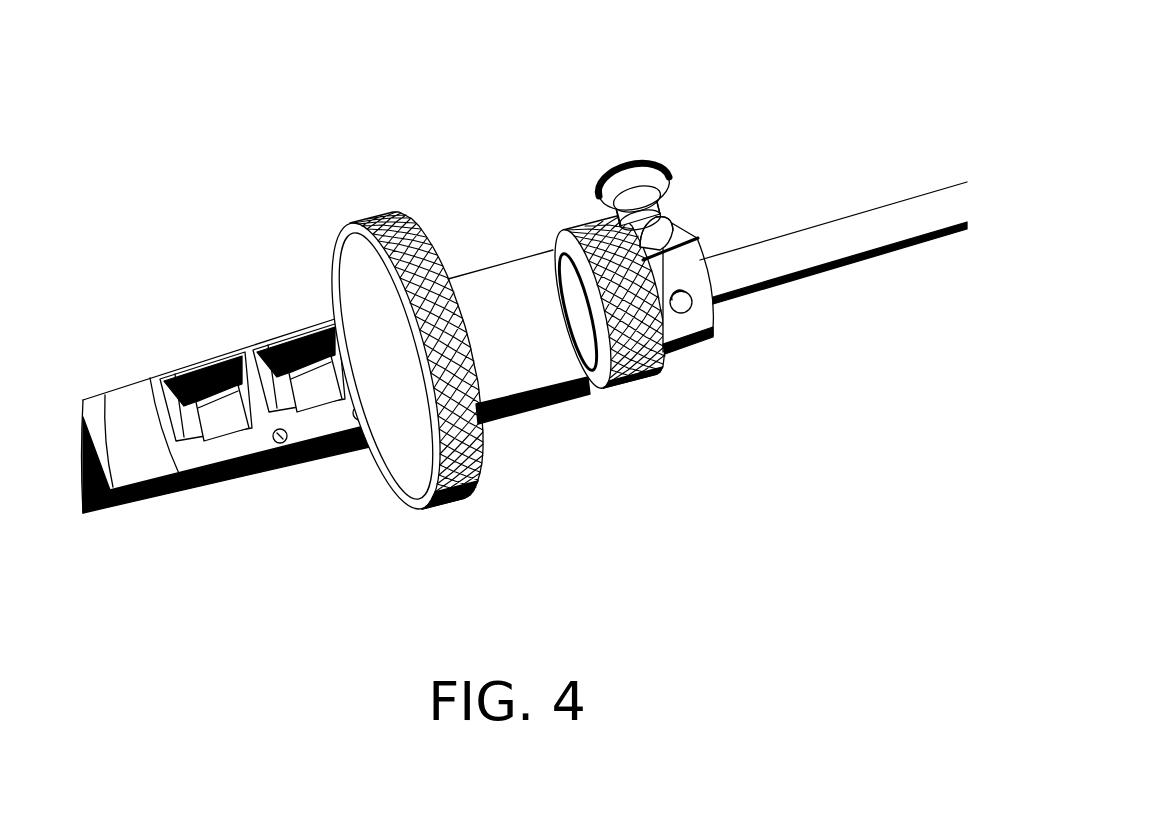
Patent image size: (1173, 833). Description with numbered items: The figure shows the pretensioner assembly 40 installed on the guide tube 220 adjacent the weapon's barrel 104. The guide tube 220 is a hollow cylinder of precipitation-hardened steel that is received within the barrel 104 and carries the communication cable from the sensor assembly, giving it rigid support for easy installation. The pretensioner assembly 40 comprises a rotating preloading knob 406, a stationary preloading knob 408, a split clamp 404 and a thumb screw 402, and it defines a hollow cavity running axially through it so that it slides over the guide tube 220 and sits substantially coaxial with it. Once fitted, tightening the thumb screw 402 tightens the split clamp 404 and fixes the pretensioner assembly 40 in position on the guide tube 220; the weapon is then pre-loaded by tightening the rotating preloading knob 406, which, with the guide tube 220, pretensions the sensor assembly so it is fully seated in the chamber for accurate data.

The pretensioner assembly 40 is at (468, 268).
The barrel 104 is at (212, 483).
The guide tube 220 is at (823, 267).
The thumb screw 402 is at (648, 155).
The split clamp 404 is at (702, 237).
The rotating preloading knob 406 is at (377, 218).
The stationary preloading knob 408 is at (573, 225).